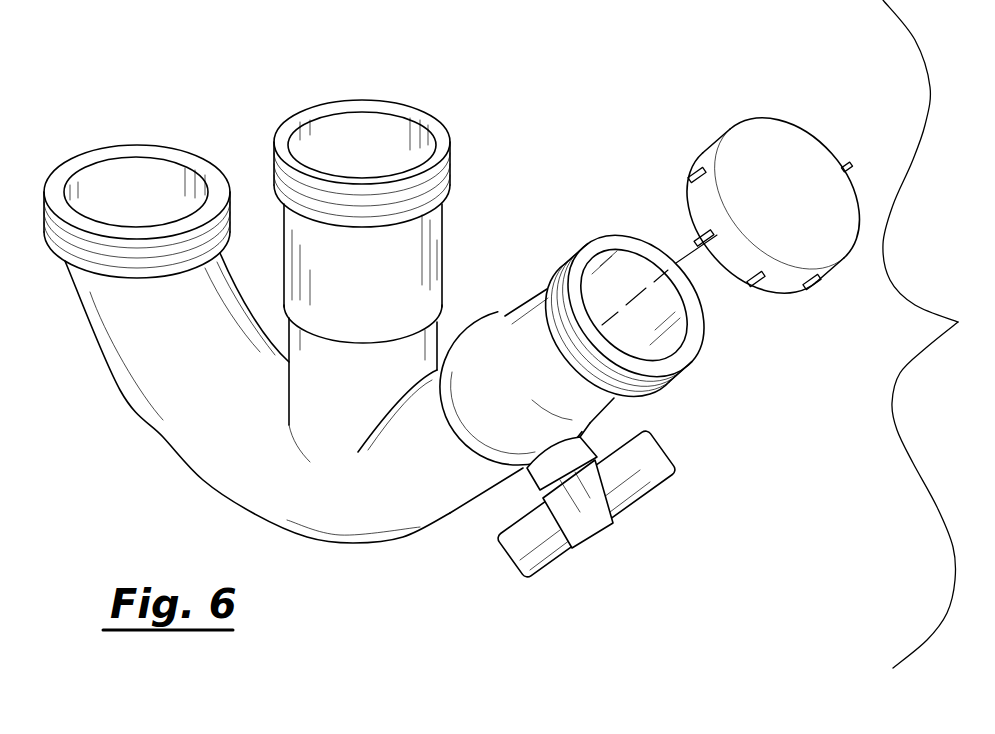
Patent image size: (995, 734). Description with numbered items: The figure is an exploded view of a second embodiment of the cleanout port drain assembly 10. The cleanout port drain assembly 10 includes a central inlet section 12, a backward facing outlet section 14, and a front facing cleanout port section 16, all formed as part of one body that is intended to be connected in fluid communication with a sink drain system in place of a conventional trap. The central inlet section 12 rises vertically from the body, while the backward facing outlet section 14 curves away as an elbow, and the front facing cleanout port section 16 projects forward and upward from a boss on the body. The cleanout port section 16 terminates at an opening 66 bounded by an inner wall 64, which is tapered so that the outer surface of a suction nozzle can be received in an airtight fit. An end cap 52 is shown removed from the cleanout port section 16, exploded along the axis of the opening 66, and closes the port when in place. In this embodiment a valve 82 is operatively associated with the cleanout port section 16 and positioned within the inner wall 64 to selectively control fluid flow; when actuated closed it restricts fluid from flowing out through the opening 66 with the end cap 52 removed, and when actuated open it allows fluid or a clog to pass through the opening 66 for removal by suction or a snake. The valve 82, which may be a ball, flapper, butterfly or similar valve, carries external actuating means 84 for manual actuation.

The cleanout port drain assembly 10 is at (239, 473).
The central inlet section 12 is at (432, 248).
The backward facing outlet section 14 is at (108, 350).
The front facing cleanout port section 16 is at (463, 505).
The end cap 52 is at (777, 157).
The inner wall 64 is at (607, 268).
The opening 66 is at (648, 323).
The valve 82 is at (497, 430).
The external actuating means 84 is at (607, 528).